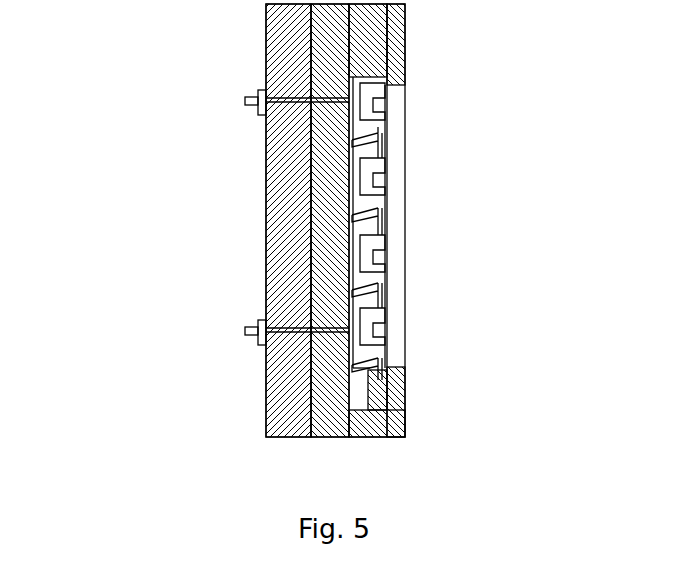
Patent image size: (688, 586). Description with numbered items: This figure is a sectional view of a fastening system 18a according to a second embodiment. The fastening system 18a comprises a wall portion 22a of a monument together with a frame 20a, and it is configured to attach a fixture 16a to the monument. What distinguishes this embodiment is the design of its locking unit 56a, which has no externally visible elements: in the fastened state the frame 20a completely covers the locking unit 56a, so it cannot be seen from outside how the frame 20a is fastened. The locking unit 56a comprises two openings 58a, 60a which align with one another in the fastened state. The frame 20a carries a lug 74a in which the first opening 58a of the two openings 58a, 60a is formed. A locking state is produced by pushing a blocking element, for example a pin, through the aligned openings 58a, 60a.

The fastening system 18a is at (174, 399).
The wall portion 22a is at (243, 42).
The frame 20a is at (427, 50).
The fixture 16a is at (388, 148).
The first opening 58a is at (386, 383).
The second opening 60a is at (377, 390).
The locking unit 56a is at (428, 405).
The lug 74a is at (401, 441).